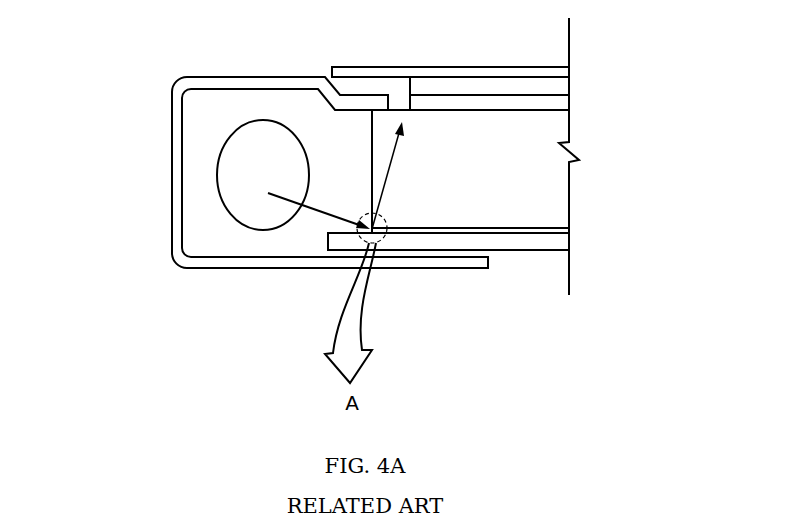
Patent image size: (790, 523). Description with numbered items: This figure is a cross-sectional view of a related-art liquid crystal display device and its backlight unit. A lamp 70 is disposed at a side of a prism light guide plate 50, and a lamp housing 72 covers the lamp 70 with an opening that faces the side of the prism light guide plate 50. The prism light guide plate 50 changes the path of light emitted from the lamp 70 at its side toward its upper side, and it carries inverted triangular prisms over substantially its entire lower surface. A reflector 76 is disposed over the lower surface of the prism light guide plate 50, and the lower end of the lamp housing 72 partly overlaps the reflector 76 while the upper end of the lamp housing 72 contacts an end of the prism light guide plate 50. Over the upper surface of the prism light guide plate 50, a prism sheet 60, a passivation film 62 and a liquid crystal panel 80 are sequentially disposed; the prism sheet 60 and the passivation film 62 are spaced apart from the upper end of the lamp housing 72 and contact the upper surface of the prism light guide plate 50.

The prism light guide plate 50 is at (547, 190).
The prism sheet 60 is at (555, 103).
The passivation film 62 is at (552, 82).
The lamp 70 is at (248, 193).
The lamp housing 72 is at (172, 146).
The reflector 76 is at (553, 240).
The liquid crystal panel 80 is at (473, 73).